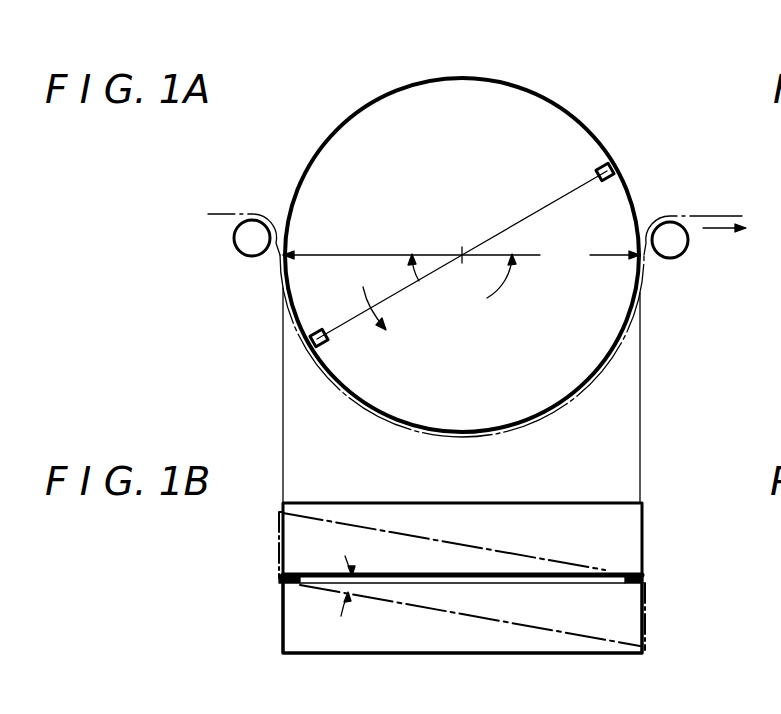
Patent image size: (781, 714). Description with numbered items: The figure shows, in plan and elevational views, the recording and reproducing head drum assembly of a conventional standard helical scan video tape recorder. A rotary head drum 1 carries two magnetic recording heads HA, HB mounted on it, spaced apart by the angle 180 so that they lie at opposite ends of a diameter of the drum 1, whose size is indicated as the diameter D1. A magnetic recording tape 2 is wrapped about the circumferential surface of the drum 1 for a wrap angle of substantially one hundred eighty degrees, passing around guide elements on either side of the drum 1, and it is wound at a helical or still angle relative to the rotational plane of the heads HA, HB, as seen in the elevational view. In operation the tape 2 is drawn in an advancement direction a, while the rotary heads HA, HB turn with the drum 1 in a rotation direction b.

In FIG. 1A, the rotary head drum 1 is at (462, 80).
In FIG. 1B, the rotary head drum 1 is at (496, 504).
In FIG. 1A, the magnetic recording tape 2 is at (732, 216).
In FIG. 1B, the magnetic recording tape 2 is at (575, 567).
In FIG. 1A, the magnetic recording head HA is at (331, 347).
In FIG. 1B, the magnetic recording head HA is at (294, 584).
In FIG. 1A, the magnetic recording head HB is at (594, 173).
In FIG. 1B, the magnetic recording head HB is at (636, 585).
In FIG. 1A, the diameter of the normal-sized head drum D1 is at (461, 256).
In FIG. 1A, the head spacing and wrap angle 180 is at (462, 283).
In FIG. 1A, the advancement direction a is at (722, 231).
In FIG. 1A, the rotation direction b is at (365, 292).